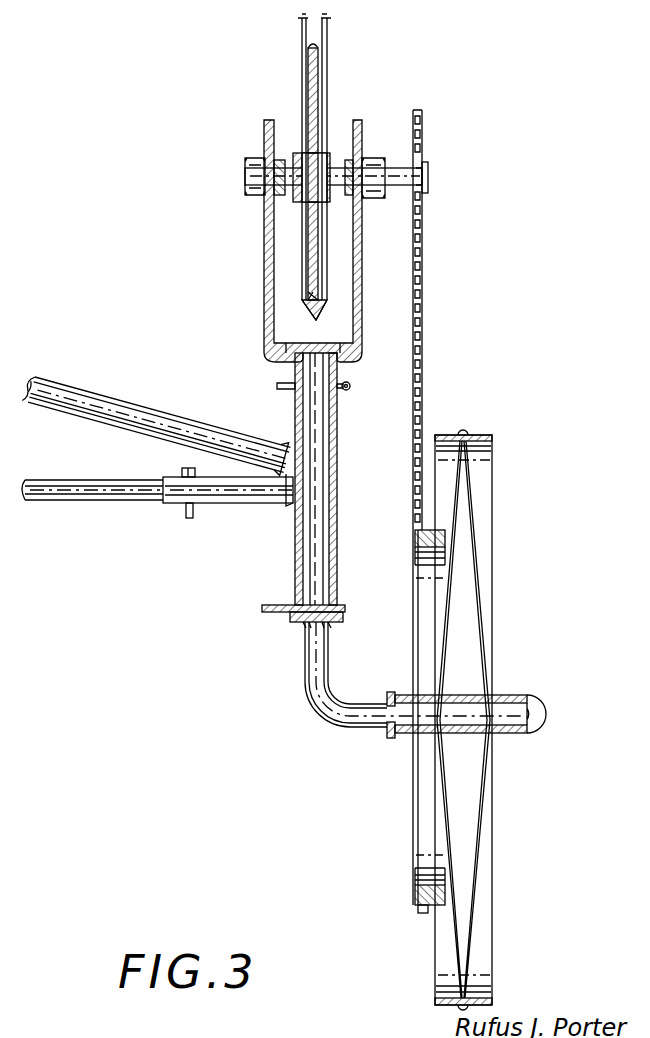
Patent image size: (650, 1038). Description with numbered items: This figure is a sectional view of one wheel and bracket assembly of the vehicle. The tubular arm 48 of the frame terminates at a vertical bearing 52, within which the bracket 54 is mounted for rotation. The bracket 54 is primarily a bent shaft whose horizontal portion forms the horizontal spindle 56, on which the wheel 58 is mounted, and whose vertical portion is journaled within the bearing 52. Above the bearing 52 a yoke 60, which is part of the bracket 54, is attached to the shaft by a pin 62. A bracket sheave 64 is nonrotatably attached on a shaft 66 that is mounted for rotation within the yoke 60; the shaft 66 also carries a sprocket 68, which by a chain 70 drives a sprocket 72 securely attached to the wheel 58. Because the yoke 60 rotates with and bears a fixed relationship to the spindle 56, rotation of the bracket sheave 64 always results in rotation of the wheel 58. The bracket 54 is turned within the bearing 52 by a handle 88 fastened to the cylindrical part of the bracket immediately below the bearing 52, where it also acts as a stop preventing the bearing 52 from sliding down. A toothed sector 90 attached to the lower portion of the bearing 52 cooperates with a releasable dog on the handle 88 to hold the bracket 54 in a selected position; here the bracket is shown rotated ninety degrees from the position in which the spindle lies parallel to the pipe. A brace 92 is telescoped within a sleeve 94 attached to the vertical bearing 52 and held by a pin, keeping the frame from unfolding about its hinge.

The arm 48 is at (123, 399).
The vertical bearing 52 is at (337, 524).
The bracket 54 is at (304, 682).
The horizontal spindle 56 is at (537, 712).
The wheel 58 is at (481, 434).
The yoke 60 is at (264, 263).
The pin 62 is at (351, 386).
The bracket sheave 64 is at (328, 70).
The shaft 66 is at (394, 165).
The sprocket 68 is at (424, 212).
The chain 70 is at (422, 312).
The sprocket 72 is at (415, 542).
The handle 88 is at (343, 618).
The toothed sector 90 is at (262, 609).
The brace 92 is at (128, 504).
The sleeve 94 is at (262, 504).